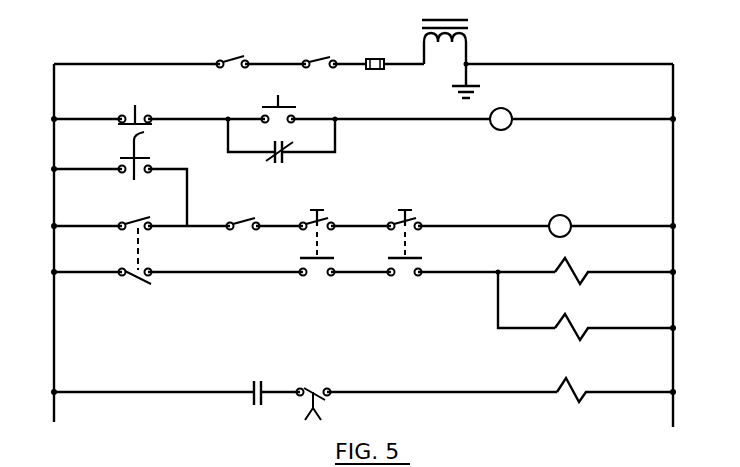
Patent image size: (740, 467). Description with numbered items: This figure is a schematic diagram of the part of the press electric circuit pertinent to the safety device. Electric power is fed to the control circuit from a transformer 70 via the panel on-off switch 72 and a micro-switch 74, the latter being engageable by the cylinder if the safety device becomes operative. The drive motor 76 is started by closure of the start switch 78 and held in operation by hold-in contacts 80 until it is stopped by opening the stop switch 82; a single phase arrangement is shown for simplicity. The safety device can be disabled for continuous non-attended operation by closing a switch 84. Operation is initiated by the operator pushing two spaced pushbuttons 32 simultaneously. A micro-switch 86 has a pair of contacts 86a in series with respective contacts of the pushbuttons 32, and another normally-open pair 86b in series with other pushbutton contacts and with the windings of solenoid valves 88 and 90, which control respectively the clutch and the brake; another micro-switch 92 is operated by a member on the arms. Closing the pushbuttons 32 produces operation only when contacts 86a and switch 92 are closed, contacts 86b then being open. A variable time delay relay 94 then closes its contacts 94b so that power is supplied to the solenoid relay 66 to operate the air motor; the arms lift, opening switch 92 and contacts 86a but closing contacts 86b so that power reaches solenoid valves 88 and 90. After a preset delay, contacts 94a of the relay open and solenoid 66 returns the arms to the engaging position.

The micro-switch 74 is at (234, 56).
The panel on-off switch 72 is at (317, 39).
The transformer 70 is at (428, 18).
The drive motor 76 is at (492, 126).
The stop switch 82 is at (143, 115).
The start switch 78 is at (264, 103).
The hold-in contacts 80 is at (284, 154).
The switch 84 is at (132, 165).
The pair of contacts 86a is at (140, 218).
The normally-open pair of contacts 86b is at (132, 270).
The micro-switch 86 is at (140, 250).
The micro-switch 92 is at (240, 230).
The pushbuttons 32 is at (324, 217).
The variable time delay relay 94 is at (568, 216).
The solenoid valve 88 is at (572, 262).
The solenoid valve 90 is at (572, 318).
The solenoid relay 66 is at (572, 382).
The contacts 94b is at (268, 370).
The contacts 94a is at (313, 392).